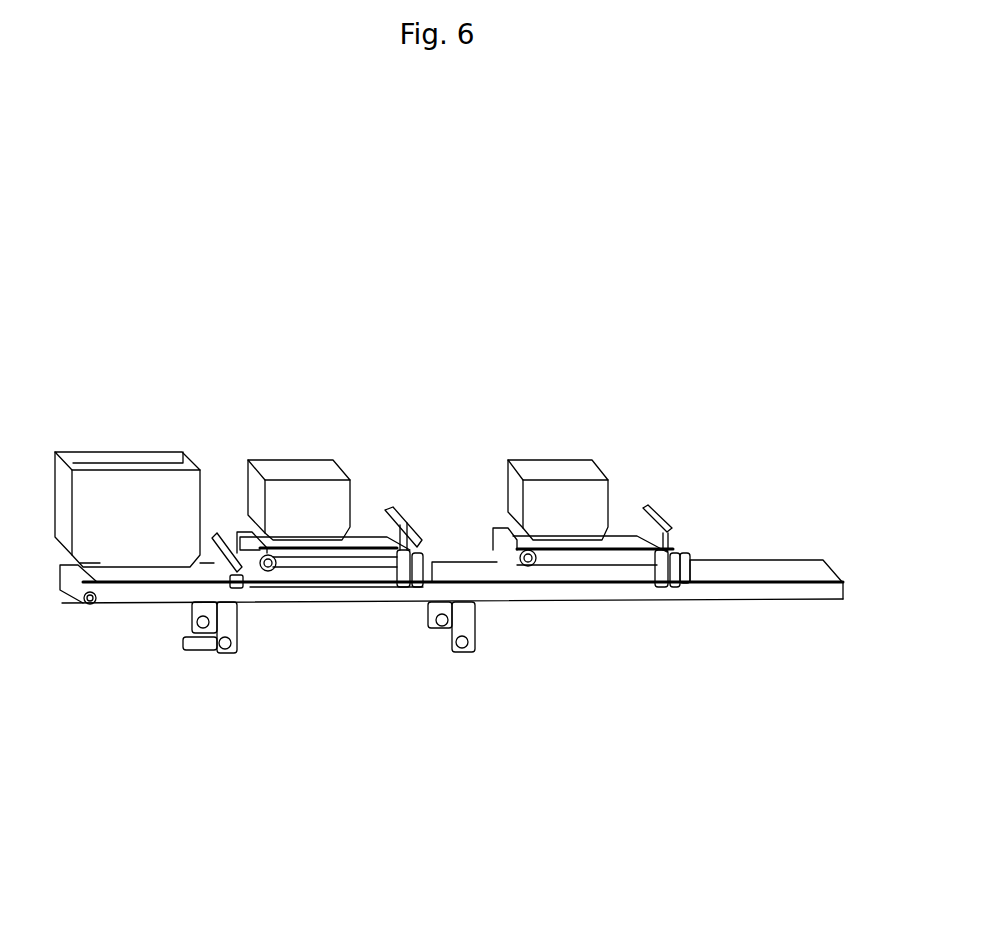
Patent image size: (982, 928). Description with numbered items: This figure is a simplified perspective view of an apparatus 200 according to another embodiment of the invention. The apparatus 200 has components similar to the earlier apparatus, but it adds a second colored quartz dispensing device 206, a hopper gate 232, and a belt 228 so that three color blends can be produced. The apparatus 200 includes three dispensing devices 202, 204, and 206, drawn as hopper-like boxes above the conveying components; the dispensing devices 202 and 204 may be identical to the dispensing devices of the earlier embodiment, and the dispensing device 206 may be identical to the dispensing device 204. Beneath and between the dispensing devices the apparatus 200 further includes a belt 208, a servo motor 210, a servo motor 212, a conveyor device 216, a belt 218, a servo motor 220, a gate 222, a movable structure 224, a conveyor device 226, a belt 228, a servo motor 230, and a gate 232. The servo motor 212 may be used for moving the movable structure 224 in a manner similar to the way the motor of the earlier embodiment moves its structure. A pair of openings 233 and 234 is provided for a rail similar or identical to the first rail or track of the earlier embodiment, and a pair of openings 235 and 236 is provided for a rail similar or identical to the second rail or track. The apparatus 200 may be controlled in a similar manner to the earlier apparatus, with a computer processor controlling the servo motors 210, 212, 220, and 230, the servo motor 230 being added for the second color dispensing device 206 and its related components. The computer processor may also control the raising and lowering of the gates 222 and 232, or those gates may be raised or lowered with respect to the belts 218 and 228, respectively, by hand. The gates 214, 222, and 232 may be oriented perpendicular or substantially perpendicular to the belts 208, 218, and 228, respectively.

The apparatus 200 is at (467, 340).
The dispensing device 202 is at (118, 465).
The dispensing device 204 is at (284, 468).
The dispensing device 206 is at (546, 465).
The belt 208 is at (150, 583).
The servo motor 210 is at (92, 608).
The servo motor 212 is at (185, 648).
The gate 214 is at (212, 540).
The conveyor device 216 is at (360, 532).
The belt 218 is at (378, 534).
The servo motor 220 is at (270, 571).
The gate 222 is at (397, 522).
The movable structure 224 is at (323, 595).
The conveyor device 226 is at (612, 530).
The belt 228 is at (637, 535).
The servo motor 230 is at (532, 567).
The gate 232 is at (656, 519).
The opening 233 is at (205, 629).
The opening 234 is at (230, 649).
The opening 235 is at (442, 627).
The opening 236 is at (463, 649).